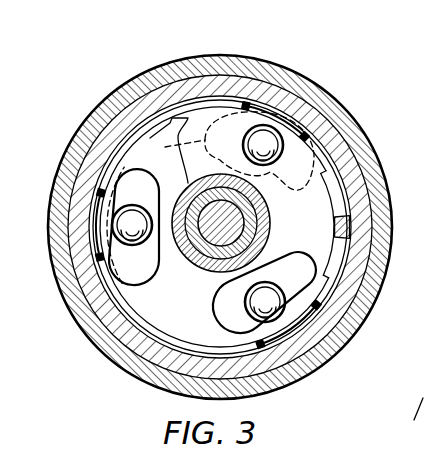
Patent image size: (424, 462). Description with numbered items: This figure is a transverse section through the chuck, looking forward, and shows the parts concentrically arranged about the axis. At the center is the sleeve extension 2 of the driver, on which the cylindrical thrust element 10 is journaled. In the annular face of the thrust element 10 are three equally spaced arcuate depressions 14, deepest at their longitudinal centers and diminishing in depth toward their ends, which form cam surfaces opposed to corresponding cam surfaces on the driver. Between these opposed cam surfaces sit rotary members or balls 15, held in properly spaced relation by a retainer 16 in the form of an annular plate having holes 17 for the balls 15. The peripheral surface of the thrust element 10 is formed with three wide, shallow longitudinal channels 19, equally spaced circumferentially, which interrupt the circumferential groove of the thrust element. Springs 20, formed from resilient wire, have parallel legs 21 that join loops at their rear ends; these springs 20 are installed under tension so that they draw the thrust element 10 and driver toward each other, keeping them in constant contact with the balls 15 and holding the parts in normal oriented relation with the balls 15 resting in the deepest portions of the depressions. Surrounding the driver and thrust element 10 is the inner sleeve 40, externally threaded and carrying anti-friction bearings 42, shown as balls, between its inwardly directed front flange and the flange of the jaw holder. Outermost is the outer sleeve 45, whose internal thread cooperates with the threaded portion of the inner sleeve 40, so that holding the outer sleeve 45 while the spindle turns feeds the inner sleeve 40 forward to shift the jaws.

The sleeve extension 2 is at (270, 226).
The thrust element 10 is at (203, 286).
The arcuate depressions 14 is at (140, 180).
The balls 15 is at (322, 148).
The retainer 16 is at (188, 120).
The holes 17 is at (273, 168).
The longitudinal channels 19 is at (96, 220).
The springs 20 is at (310, 133).
The legs 21 is at (108, 111).
The inner sleeve 40 is at (244, 227).
The anti-friction bearings 42 is at (350, 227).
The outer sleeve 45 is at (370, 288).